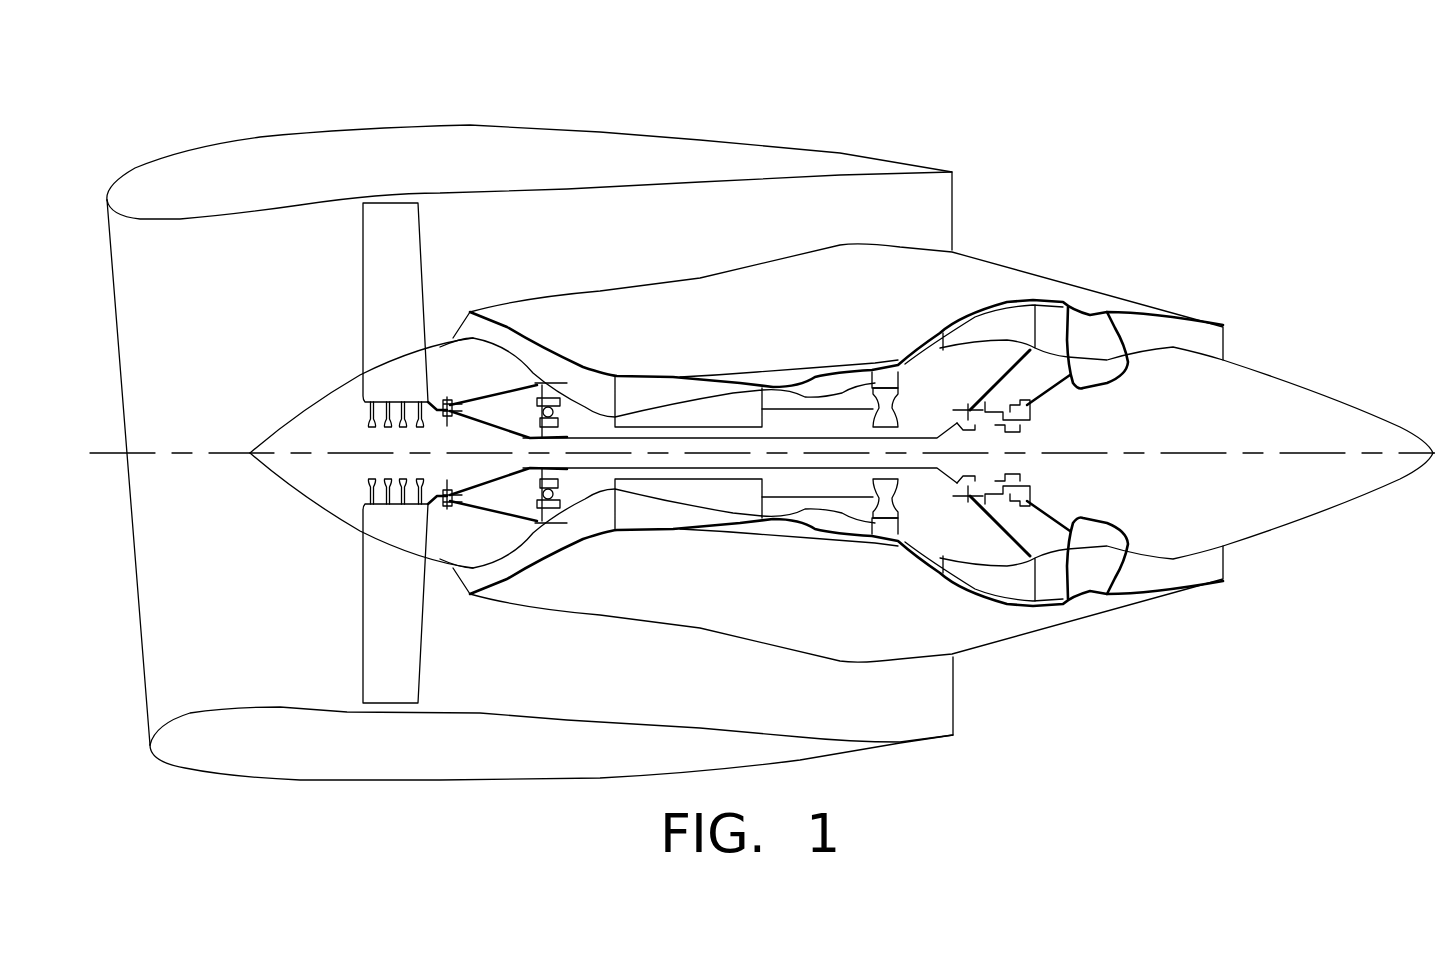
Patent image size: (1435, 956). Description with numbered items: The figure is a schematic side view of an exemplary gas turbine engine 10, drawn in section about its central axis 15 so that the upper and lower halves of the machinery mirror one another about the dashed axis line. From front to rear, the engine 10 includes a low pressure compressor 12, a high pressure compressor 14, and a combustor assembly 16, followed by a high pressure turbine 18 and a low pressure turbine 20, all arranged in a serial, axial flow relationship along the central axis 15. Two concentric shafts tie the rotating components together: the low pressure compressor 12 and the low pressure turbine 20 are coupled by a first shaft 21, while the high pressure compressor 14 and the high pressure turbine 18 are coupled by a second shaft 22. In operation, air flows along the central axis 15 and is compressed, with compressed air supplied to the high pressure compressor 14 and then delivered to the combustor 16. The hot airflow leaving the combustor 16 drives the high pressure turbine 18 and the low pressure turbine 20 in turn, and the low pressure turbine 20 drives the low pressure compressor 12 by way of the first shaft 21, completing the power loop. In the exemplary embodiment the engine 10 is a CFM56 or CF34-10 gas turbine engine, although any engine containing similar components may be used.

The gas turbine engine 10 is at (840, 88).
The low pressure compressor 12 is at (335, 625).
The high pressure compressor 14 is at (640, 390).
The central axis 15 is at (1167, 453).
The combustor assembly 16 is at (838, 385).
The high pressure turbine 18 is at (875, 540).
The low pressure turbine 20 is at (990, 320).
The first shaft 21 is at (593, 470).
The second shaft 22 is at (793, 410).